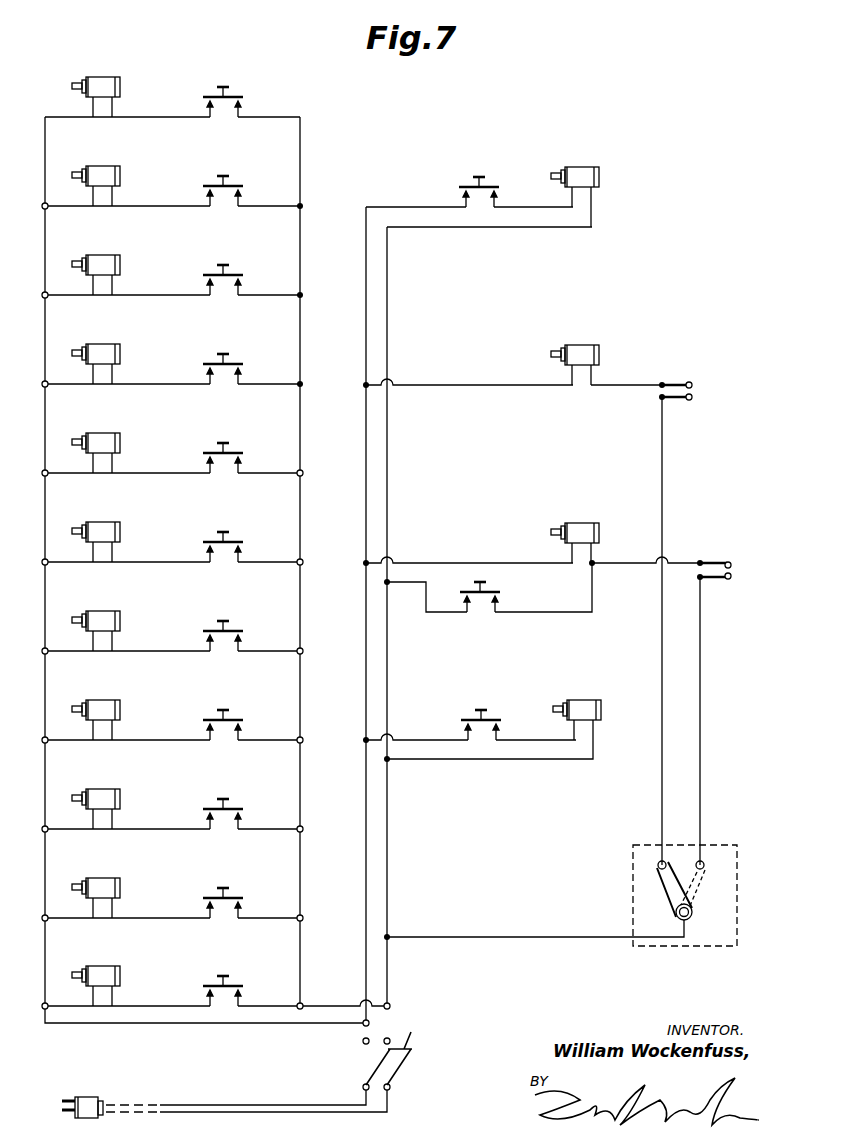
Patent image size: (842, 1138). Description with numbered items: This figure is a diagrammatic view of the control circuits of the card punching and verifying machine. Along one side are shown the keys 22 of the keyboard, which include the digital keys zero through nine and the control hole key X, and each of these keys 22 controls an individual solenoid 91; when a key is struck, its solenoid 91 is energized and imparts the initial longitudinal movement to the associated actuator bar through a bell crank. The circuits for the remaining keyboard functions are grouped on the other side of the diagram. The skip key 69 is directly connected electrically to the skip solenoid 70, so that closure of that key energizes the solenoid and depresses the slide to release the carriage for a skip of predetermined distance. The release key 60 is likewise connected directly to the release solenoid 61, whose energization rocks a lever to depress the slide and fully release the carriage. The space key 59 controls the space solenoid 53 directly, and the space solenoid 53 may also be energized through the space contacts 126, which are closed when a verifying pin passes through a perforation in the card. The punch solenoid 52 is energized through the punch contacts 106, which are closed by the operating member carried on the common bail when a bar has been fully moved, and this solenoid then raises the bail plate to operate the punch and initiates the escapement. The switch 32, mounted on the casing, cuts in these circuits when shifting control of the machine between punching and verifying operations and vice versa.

The individual solenoid 91 is at (100, 77).
The keys 22 is at (240, 96).
The skip key 69 is at (493, 185).
The skip solenoid 70 is at (581, 169).
The punch solenoid 52 is at (584, 351).
The punch contacts 106 is at (696, 397).
The space solenoid 53 is at (582, 530).
The space contacts 126 is at (731, 576).
The space key 59 is at (498, 592).
The release key 60 is at (494, 720).
The release solenoid 61 is at (582, 703).
The switch 32 is at (668, 885).